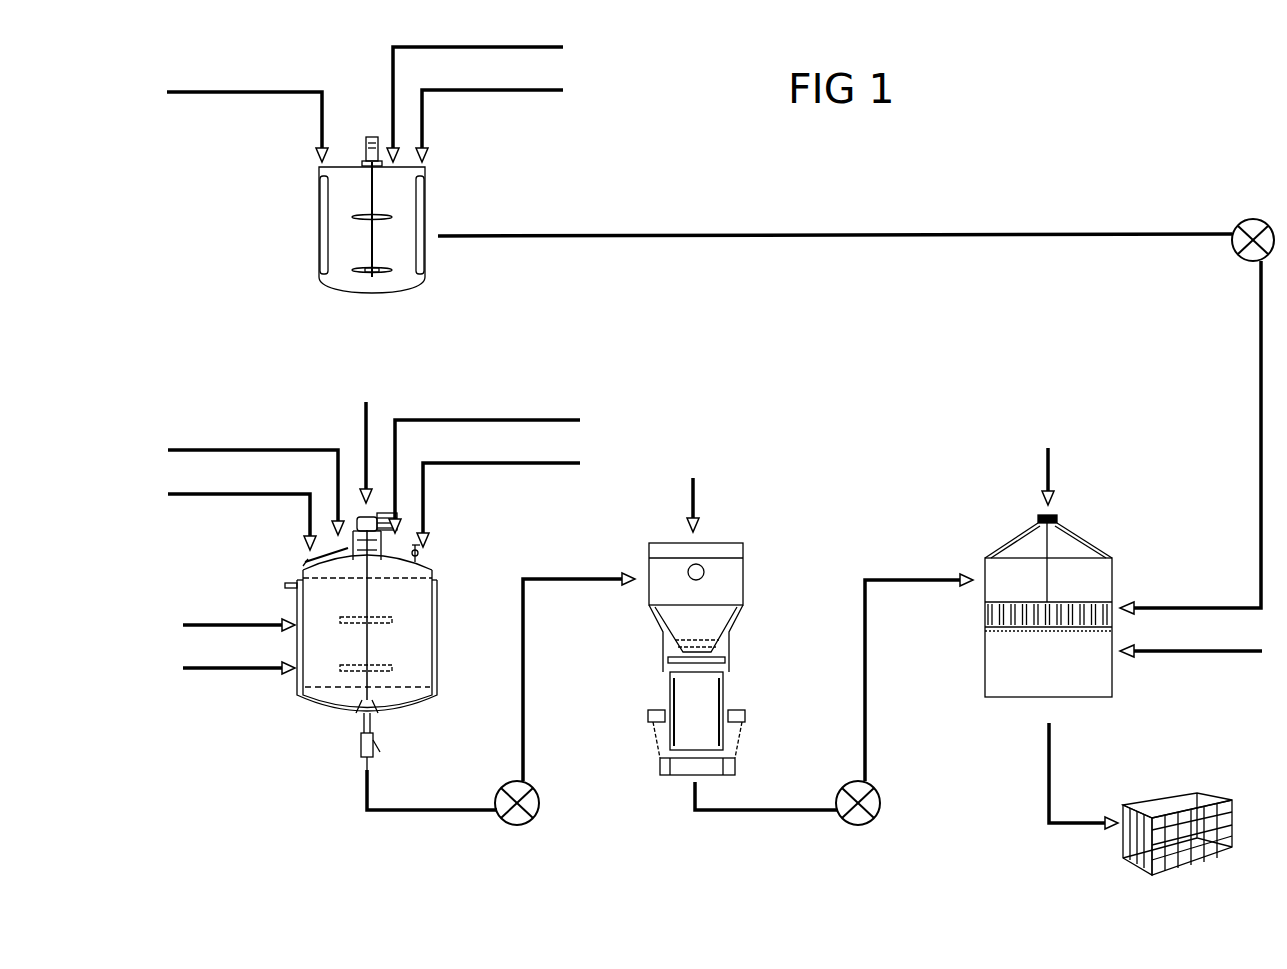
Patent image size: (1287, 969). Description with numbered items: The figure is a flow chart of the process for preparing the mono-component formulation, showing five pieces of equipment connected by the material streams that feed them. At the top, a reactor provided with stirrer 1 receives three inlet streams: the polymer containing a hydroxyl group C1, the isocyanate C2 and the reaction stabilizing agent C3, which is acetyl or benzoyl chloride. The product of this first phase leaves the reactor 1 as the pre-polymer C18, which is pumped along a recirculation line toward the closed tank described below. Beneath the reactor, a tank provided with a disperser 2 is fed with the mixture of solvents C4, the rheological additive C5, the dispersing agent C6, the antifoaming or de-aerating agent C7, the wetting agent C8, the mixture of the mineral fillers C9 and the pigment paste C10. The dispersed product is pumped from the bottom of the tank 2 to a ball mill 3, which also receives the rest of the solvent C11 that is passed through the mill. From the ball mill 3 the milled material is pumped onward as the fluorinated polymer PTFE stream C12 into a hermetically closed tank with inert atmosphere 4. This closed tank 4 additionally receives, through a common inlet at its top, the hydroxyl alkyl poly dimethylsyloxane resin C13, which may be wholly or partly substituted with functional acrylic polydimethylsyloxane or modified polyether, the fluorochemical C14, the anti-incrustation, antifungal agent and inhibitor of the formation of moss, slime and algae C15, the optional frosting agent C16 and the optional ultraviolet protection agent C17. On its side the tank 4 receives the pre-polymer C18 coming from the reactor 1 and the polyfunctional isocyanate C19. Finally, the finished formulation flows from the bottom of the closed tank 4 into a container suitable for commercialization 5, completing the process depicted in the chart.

The reactor provided with stirrer 1 is at (353, 215).
The tank provided with a disperser 2 is at (384, 641).
The ball mill 3 is at (716, 659).
The hermetically closed tank with inert atmosphere 4 is at (1031, 606).
The container suitable for commercialization 5 is at (1199, 834).
The polymer containing a hydroxyl group C1 is at (247, 113).
The isocyanate C2 is at (475, 90).
The reaction stabilizing agent C3 is at (489, 113).
The mixture of solvents C4 is at (239, 657).
The rheological additive C5 is at (239, 613).
The dispersing agent C6 is at (242, 507).
The antifoaming or de-aerating agent C7 is at (256, 477).
The wetting agent C8 is at (365, 437).
The mixture of the mineral fillers C9 is at (484, 462).
The pigment paste C10 is at (498, 491).
The rest of the solvent passed through the ball mill C11 is at (698, 491).
The fluorinated polymer PTFE C12 is at (919, 666).
The hydroxyl alkyl poly dimethylsyloxane resin C13 is at (1071, 464).
The fluorochemical C14 is at (1071, 464).
The anti-incrustation, antifungal agent, and inhibitor of the formation of moss, sli C15 is at (1071, 464).
The frosting agent C16 is at (1071, 464).
The ultraviolet protection agent C17 is at (1071, 464).
The pre-polymer (PHASE 1) C18 is at (1190, 437).
The polyfunctional isocyanate C19 is at (1191, 640).